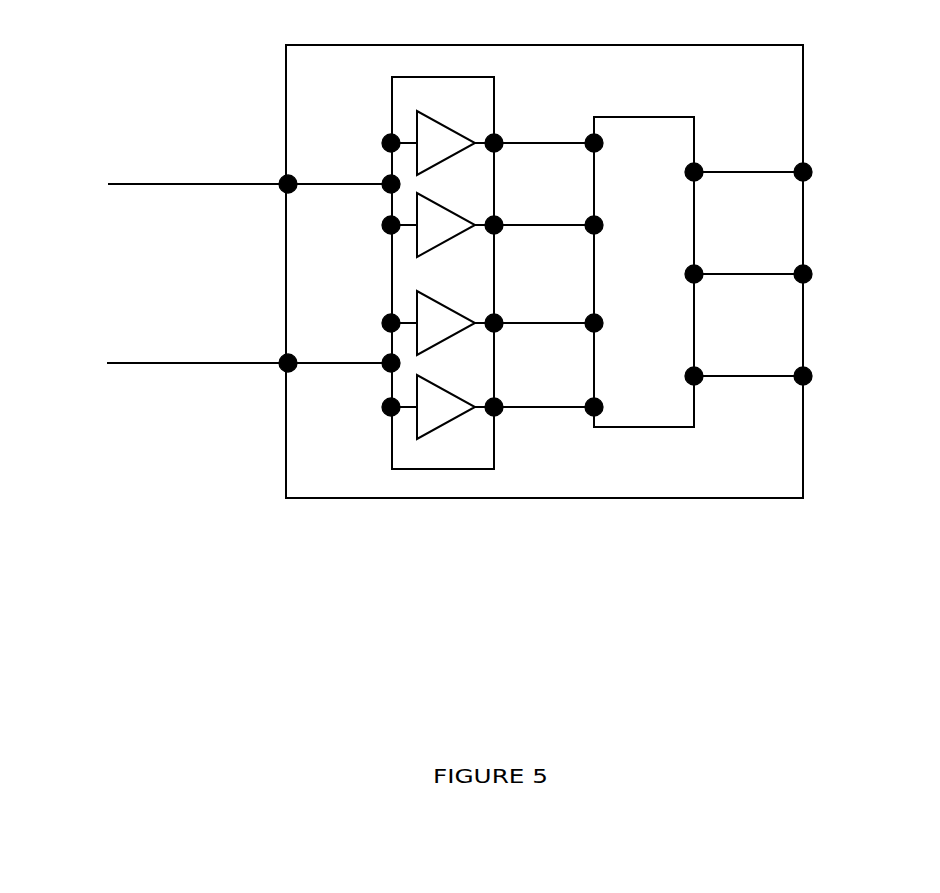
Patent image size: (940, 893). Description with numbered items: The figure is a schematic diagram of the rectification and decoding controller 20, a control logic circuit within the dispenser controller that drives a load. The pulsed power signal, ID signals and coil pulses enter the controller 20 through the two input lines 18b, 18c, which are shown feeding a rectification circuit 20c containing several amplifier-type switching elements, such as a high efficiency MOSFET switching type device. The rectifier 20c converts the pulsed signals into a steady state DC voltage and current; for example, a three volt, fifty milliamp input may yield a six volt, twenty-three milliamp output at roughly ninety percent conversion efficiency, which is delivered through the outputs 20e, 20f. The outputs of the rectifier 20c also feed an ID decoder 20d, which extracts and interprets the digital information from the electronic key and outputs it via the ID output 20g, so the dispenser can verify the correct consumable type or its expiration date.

The rectification and decoding controller 20 is at (231, 519).
The input line 18c is at (226, 184).
The input line 18b is at (225, 362).
The rectification circuit 20c is at (440, 469).
The ID decoder 20d is at (642, 427).
The output 20e is at (790, 174).
The output 20f is at (782, 276).
The ID output 20g is at (792, 375).